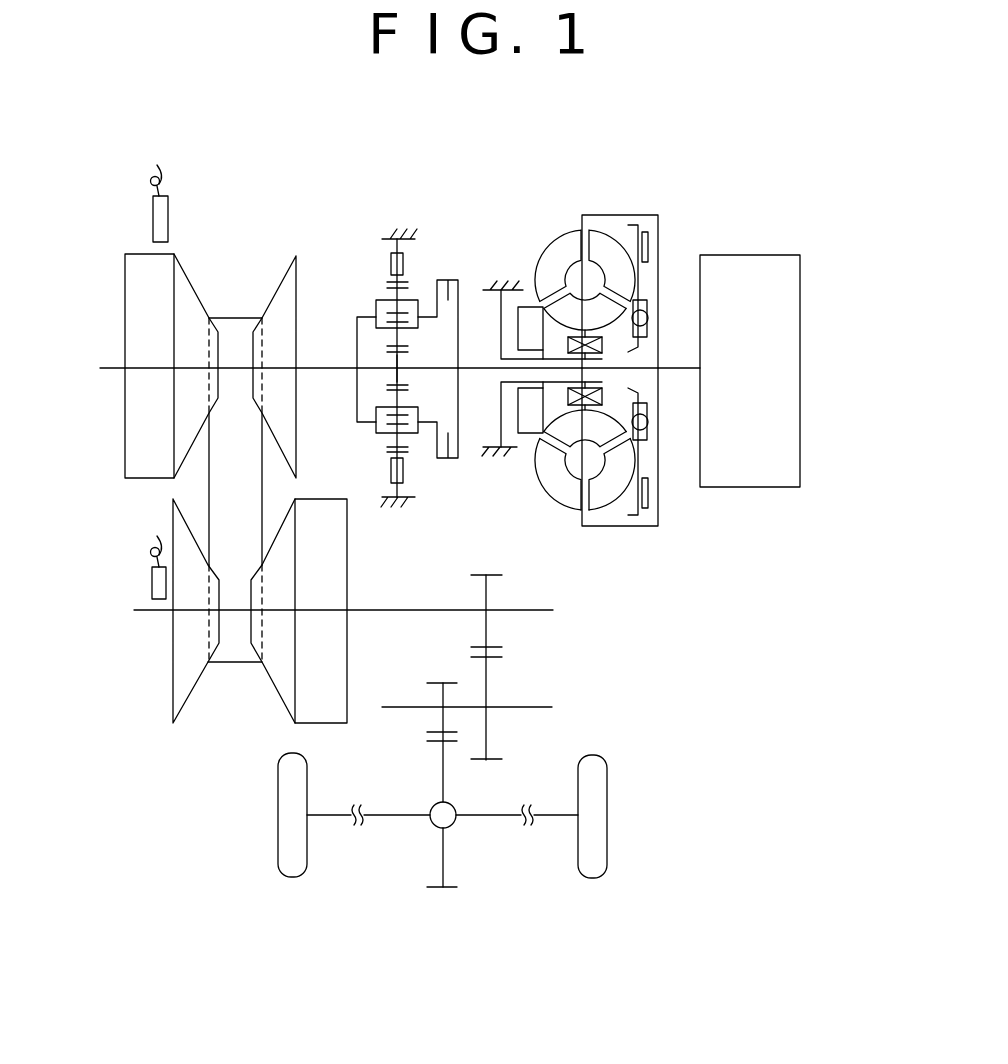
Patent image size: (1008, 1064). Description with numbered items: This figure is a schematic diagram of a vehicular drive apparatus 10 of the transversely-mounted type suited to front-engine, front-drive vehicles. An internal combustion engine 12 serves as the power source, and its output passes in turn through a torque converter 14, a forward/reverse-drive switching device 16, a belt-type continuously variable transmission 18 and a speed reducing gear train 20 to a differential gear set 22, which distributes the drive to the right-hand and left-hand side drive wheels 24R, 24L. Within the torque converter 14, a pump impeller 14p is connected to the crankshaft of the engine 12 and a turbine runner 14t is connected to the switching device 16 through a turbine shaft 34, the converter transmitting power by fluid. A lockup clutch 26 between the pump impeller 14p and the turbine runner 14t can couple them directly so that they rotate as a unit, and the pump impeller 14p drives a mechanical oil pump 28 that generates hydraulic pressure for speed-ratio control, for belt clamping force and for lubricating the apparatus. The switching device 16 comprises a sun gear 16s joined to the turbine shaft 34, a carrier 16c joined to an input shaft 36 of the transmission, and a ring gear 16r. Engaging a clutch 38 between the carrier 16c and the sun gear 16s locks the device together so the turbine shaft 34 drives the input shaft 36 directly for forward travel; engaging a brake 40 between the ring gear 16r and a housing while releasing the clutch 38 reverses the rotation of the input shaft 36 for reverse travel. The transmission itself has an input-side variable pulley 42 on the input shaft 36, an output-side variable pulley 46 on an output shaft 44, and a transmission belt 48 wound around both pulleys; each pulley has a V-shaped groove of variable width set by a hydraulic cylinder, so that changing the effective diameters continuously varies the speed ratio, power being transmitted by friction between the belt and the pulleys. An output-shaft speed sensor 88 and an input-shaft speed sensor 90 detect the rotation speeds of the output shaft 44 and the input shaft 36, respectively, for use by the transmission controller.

The vehicular drive apparatus 10 is at (763, 168).
The internal combustion engine 12 is at (800, 331).
The torque converter 14 is at (636, 353).
The pump impeller 14p is at (562, 493).
The turbine runner 14t is at (605, 498).
The forward/reverse-drive switching device 16 is at (373, 330).
The carrier 16c is at (376, 300).
The sun gear 16s is at (383, 378).
The ring gear 16r is at (388, 462).
The belt-type continuously variable transmission 18 is at (242, 479).
The speed reducing gear train 20 is at (552, 668).
The differential gear set 22 is at (437, 817).
The left-hand side drive wheel 24L is at (285, 847).
The right-hand side drive wheel 24R is at (588, 847).
The lockup clutch 26 is at (648, 242).
The mechanical oil pump 28 is at (531, 307).
The turbine shaft 34 is at (473, 368).
The input shaft 36 is at (323, 367).
The clutch 38 is at (445, 458).
The brake 40 is at (390, 255).
The input-side variable pulley 42 is at (132, 277).
The output shaft 44 is at (382, 612).
The output-side variable pulley 46 is at (350, 575).
The transmission belt 48 is at (234, 318).
The output-shaft speed sensor 88 is at (152, 583).
The input-shaft speed sensor 90 is at (168, 208).